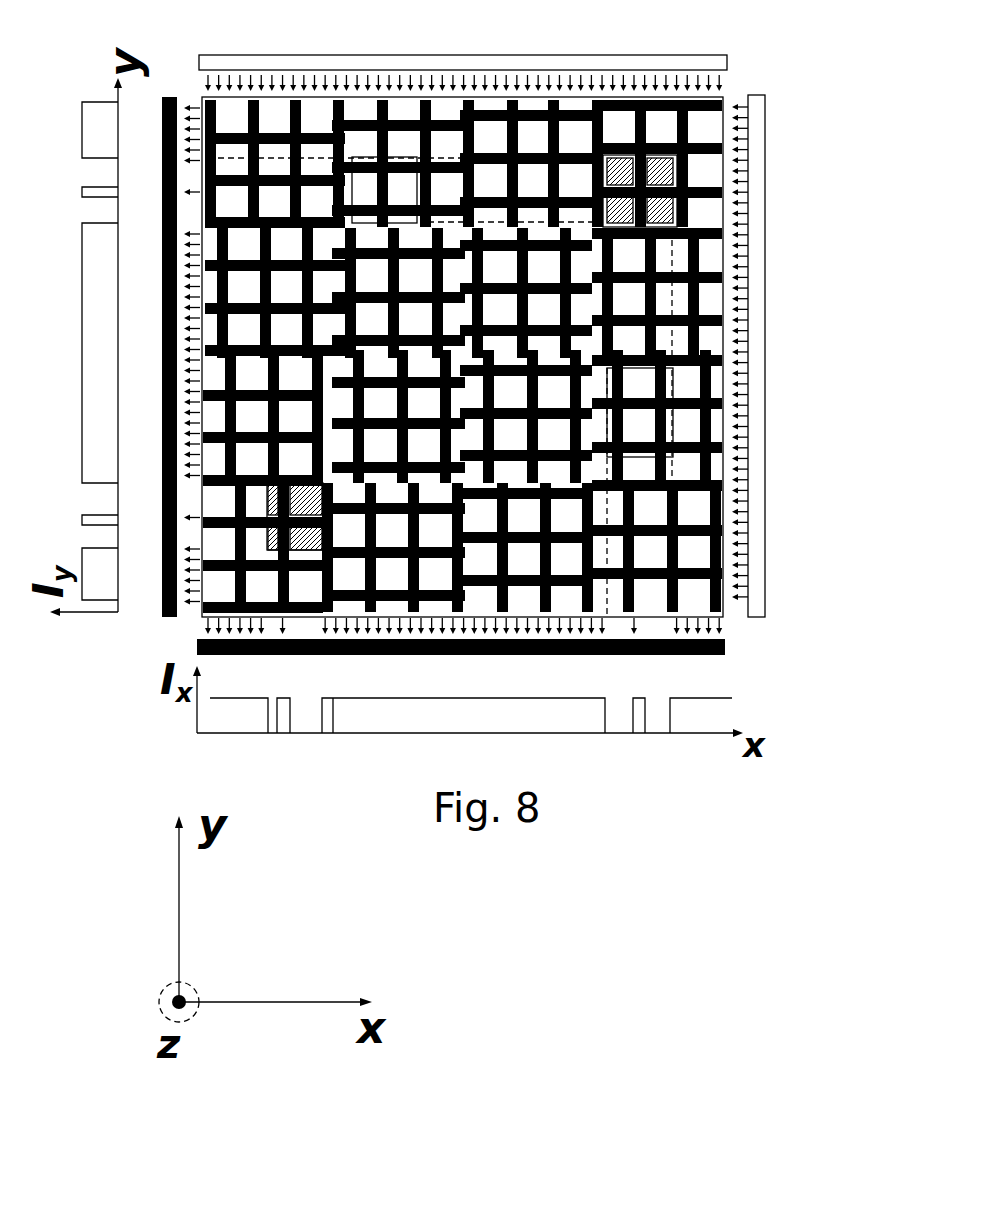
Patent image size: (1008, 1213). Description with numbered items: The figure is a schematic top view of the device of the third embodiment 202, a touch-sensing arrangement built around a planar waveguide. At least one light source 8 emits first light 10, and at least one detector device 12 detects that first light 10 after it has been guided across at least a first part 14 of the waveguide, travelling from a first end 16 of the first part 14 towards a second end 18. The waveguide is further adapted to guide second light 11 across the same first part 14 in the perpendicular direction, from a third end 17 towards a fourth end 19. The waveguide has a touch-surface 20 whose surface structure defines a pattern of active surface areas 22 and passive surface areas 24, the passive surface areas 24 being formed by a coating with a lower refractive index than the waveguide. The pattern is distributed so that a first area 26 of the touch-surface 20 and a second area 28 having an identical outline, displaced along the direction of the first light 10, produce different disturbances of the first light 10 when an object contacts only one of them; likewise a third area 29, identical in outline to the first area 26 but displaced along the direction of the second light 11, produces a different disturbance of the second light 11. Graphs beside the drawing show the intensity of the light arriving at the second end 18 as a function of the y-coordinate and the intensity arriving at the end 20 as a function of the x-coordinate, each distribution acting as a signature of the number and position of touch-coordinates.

The light source 8 is at (420, 63).
The first light 10 is at (198, 108).
The second light 11 is at (513, 80).
The detector device 12 is at (160, 612).
The first part of the waveguide 14 is at (470, 356).
The first end 16 is at (717, 342).
The third end 17 is at (312, 103).
The second end 18 is at (210, 323).
The fourth end 19 is at (613, 608).
The touch-surface 20 is at (422, 354).
The active surface areas 22 is at (438, 570).
The passive surface areas 24 is at (342, 598).
The first area 26 is at (657, 143).
The second area 28 is at (360, 183).
The third area 29 is at (652, 413).
The third embodiment 202 is at (481, 366).